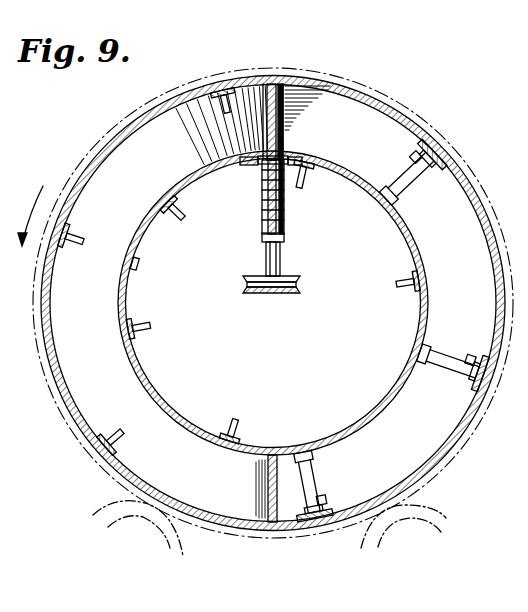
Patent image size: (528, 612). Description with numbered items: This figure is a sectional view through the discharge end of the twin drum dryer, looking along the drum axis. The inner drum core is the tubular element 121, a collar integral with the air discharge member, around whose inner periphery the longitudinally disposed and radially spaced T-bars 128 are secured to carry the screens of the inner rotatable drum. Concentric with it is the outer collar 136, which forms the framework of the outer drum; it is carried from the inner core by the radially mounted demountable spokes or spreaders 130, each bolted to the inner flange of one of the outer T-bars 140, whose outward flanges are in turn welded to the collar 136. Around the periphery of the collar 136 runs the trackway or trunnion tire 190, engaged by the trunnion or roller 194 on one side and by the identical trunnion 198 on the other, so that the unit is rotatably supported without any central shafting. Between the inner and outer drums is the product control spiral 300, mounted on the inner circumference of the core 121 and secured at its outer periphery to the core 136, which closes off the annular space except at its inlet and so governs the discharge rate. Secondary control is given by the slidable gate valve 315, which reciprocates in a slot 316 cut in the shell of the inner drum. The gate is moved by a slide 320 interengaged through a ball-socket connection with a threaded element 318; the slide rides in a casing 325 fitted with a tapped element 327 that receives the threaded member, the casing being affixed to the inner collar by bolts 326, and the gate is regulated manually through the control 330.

The tubular element 121 is at (196, 168).
The T-bars 128 is at (177, 215).
The spreaders 130 is at (443, 352).
The tubular element 136 is at (398, 120).
The T-bars 140 is at (77, 233).
The trunnion tire 190 is at (263, 531).
The trunnion 194 is at (442, 510).
The trunnion 198 is at (129, 535).
The spiral means 300 is at (98, 356).
The gate valve 315 is at (283, 122).
The slot 316 is at (283, 152).
The threaded element 318 is at (282, 258).
The slide 320 is at (262, 168).
The casing 325 is at (285, 224).
The bolts 326 is at (290, 166).
The tapped element 327 is at (262, 234).
The control 330 is at (291, 293).